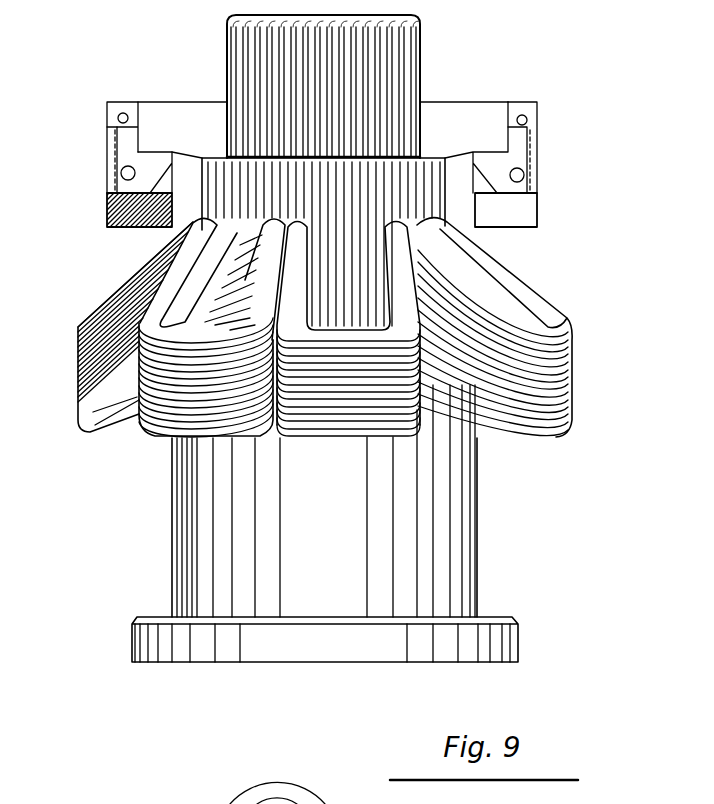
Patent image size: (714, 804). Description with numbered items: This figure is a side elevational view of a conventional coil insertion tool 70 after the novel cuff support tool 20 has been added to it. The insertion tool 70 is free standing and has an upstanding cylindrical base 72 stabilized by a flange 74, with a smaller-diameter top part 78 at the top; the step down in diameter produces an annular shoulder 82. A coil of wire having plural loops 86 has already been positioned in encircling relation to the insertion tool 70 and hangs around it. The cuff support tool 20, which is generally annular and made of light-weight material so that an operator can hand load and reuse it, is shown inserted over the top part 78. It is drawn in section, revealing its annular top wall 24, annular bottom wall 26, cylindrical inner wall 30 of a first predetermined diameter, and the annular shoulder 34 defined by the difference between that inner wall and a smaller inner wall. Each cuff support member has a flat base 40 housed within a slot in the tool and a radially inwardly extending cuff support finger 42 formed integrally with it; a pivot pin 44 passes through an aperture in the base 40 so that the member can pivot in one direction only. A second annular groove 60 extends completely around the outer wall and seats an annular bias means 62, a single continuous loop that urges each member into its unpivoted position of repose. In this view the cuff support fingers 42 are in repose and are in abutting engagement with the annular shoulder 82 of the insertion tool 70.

The cuff support tool 20 is at (538, 148).
The annular top wall 24 is at (460, 100).
The annular bottom wall 26 is at (138, 226).
The cylindrical inner wall 30 is at (183, 113).
The annular shoulder 34 is at (477, 152).
The flat base 40 is at (127, 150).
The cuff support finger 42 is at (183, 148).
The pivot pin 44 is at (110, 180).
The second annular groove 60 is at (530, 117).
The annular bias means 62 is at (122, 118).
The coil insertion tool 70 is at (532, 542).
The cylindrical base 72 is at (470, 495).
The flange 74 is at (510, 638).
The top part 78 is at (228, 18).
The annular shoulder 82 is at (430, 157).
The loops 86 is at (548, 327).